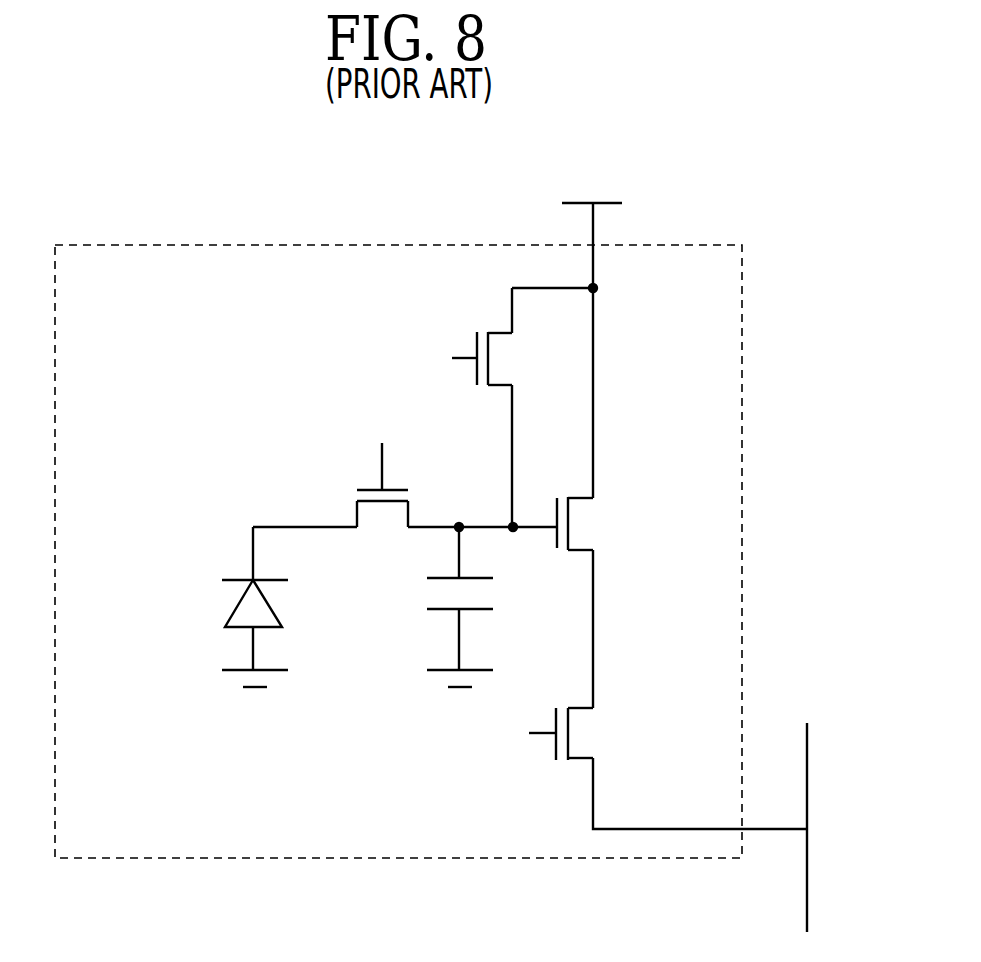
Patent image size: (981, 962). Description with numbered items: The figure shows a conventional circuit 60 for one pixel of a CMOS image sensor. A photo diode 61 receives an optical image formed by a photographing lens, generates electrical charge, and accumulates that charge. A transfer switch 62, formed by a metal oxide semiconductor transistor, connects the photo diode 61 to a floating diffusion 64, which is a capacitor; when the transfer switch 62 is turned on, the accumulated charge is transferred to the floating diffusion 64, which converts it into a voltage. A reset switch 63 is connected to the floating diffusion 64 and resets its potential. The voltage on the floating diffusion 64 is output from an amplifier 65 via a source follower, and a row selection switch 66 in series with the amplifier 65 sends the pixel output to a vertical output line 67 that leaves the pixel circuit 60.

The circuit 60 is at (742, 378).
The photo diode 61 is at (218, 593).
The transfer switch 62 is at (358, 488).
The reset switch 63 is at (478, 328).
The floating diffusion 64 is at (428, 592).
The amplifier 65 is at (597, 512).
The row selection switch 66 is at (598, 728).
The vertical output line 67 is at (807, 772).